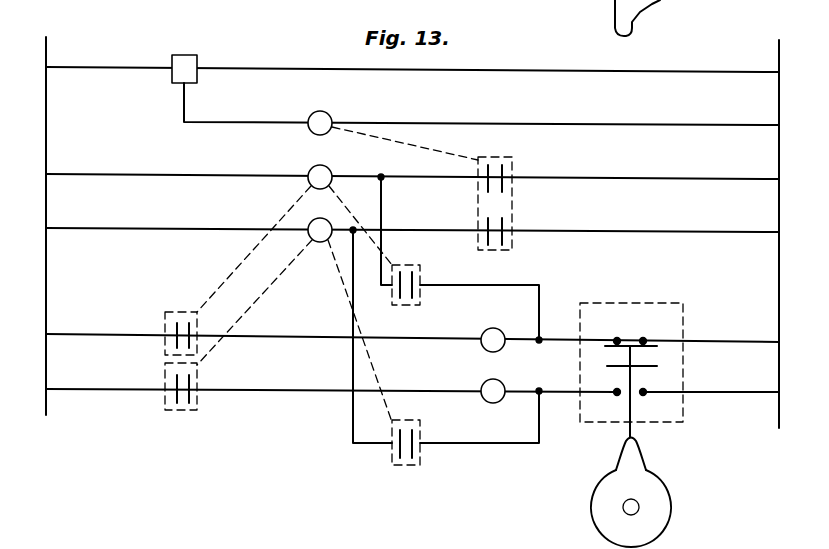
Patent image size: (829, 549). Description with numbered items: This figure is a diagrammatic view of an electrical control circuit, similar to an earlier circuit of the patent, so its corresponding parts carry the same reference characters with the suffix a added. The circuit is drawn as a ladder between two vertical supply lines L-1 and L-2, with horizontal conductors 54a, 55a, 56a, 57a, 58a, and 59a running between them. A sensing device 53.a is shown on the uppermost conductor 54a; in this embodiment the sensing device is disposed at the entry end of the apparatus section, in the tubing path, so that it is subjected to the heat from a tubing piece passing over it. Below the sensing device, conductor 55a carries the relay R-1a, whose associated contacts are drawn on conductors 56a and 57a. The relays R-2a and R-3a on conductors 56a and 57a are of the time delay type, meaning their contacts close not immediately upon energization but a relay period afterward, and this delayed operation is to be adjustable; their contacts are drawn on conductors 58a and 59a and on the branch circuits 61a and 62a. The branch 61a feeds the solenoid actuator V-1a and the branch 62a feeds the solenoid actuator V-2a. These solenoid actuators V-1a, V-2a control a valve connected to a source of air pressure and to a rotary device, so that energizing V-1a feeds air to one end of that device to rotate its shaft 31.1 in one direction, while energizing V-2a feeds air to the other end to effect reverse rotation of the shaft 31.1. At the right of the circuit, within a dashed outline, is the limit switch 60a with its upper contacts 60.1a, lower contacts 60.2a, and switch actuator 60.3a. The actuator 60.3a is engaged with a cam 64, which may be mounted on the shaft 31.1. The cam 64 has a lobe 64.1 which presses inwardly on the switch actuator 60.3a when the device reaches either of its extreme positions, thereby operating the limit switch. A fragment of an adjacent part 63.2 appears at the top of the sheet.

The supply line L-1 is at (46, 112).
The supply line L-2 is at (779, 100).
The sensing device 53.a is at (190, 64).
The conductor 54a is at (514, 70).
The conductor 55a is at (575, 112).
The conductor 56a is at (584, 178).
The conductor 57a is at (600, 233).
The conductor 58a is at (260, 338).
The conductor 59a is at (262, 393).
The relay R-1a is at (322, 113).
The relay R-2a is at (314, 170).
The relay R-3a is at (318, 242).
The solenoid actuator V-1a is at (488, 331).
The solenoid actuator V-2a is at (490, 403).
The circuit branch 61a is at (511, 287).
The circuit branch 62a is at (471, 445).
The limit switch 60a is at (664, 358).
The switch contacts 60.1a is at (647, 305).
The switch contacts 60.2a is at (693, 426).
The switch actuator 60.3a is at (630, 410).
The cam 64 is at (665, 510).
The lobe 64.1 is at (633, 457).
The shaft 31.1 is at (622, 505).
The bracket 63.2 is at (637, 22).